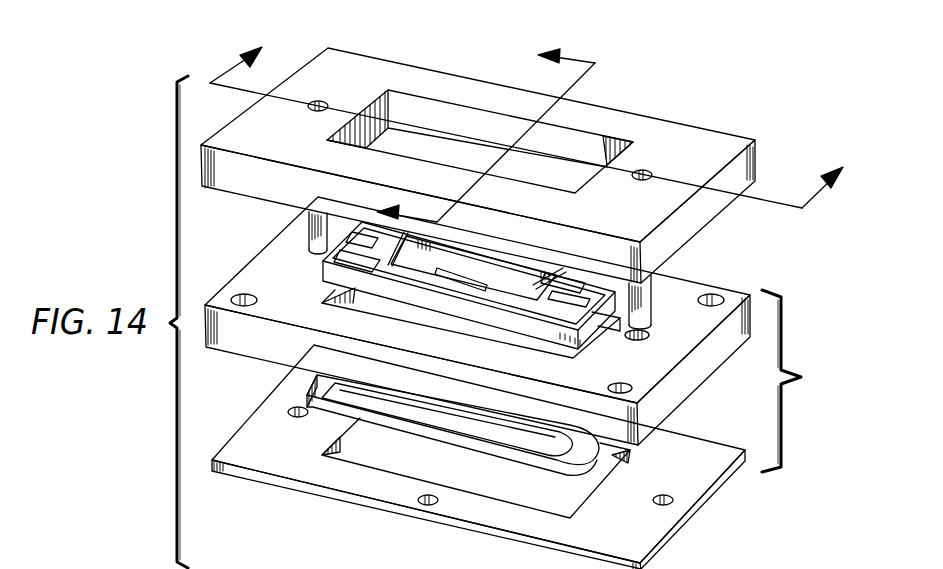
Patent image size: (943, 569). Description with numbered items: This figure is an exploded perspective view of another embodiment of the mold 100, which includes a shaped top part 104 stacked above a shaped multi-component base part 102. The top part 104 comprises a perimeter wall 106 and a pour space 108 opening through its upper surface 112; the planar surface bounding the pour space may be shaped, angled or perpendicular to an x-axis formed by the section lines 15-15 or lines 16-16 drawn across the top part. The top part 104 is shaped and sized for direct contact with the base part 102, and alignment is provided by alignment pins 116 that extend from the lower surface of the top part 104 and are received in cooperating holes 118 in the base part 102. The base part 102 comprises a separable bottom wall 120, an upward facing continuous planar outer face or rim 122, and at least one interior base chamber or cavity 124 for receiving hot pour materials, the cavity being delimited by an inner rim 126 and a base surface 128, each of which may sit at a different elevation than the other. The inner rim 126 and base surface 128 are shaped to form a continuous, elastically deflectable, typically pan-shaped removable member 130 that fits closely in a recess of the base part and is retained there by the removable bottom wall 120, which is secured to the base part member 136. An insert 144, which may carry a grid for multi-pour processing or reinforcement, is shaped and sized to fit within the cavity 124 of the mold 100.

The mold 100 is at (729, 108).
The base part 102 is at (801, 381).
The top part 104 is at (745, 134).
The perimeter wall 106 is at (696, 218).
The pour space 108 is at (432, 112).
The upper surface 112 is at (347, 77).
The alignment pins 116 is at (317, 233).
The holes 118 is at (641, 343).
The bottom wall 120 is at (277, 492).
The rim 122 is at (298, 296).
The base chamber 124 is at (473, 323).
The inner rim 126 is at (378, 304).
The base surface 128 is at (600, 432).
The removable member 130 is at (313, 382).
The base part member 136 is at (683, 423).
The insert 144 is at (543, 318).
The lines 15- 15 is at (469, 130).
The lines 16- 16 is at (532, 119).